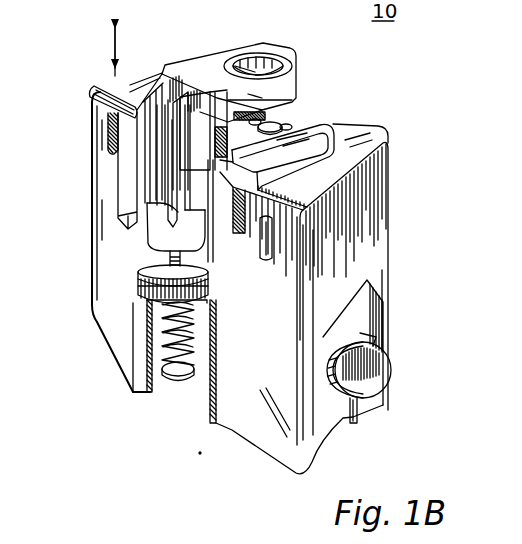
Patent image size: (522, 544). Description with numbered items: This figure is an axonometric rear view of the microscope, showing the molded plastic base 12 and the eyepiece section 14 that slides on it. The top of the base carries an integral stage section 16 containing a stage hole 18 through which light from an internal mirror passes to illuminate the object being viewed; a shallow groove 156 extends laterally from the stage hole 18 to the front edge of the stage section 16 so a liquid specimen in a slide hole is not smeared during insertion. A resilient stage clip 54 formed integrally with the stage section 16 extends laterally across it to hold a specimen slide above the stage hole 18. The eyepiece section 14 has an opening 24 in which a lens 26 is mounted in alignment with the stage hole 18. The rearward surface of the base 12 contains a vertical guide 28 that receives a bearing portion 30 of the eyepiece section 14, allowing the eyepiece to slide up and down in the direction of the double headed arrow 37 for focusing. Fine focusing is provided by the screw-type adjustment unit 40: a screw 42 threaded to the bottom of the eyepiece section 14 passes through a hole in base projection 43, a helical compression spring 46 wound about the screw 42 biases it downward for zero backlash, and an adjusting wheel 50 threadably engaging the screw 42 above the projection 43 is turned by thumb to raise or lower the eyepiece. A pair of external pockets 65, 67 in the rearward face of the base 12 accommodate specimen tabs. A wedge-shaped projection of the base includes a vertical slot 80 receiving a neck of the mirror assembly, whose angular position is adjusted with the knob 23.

The base 12 is at (92, 250).
The eyepiece section 14 is at (212, 52).
The stage section 16 is at (347, 157).
The stage hole 18 is at (276, 118).
The knob 23 is at (392, 362).
The opening 24 is at (290, 57).
The lens 26 is at (267, 77).
The vertical guide 28 is at (200, 226).
The bearing portion 30 is at (208, 162).
The double headed arrow 37 is at (112, 52).
The screw-type adjustment unit 40 is at (146, 271).
The screw 42 is at (167, 256).
The base projection 43 is at (133, 390).
The helical compression spring 46 is at (190, 346).
The adjusting wheel 50 is at (147, 303).
The resilient stage clip 54 is at (322, 126).
The external pocket 65 is at (108, 146).
The external pocket 67 is at (262, 222).
The vertical slot 80 is at (346, 412).
The shallow groove 156 is at (300, 123).